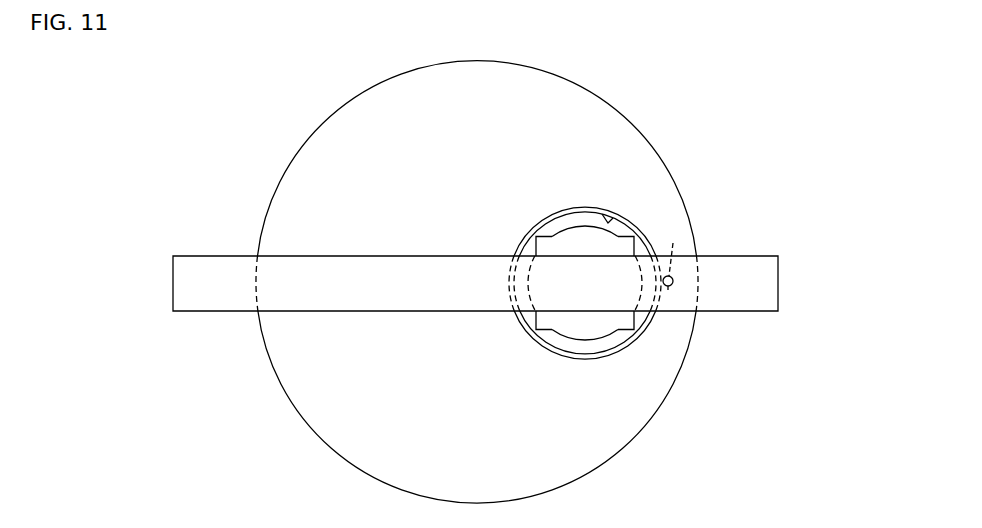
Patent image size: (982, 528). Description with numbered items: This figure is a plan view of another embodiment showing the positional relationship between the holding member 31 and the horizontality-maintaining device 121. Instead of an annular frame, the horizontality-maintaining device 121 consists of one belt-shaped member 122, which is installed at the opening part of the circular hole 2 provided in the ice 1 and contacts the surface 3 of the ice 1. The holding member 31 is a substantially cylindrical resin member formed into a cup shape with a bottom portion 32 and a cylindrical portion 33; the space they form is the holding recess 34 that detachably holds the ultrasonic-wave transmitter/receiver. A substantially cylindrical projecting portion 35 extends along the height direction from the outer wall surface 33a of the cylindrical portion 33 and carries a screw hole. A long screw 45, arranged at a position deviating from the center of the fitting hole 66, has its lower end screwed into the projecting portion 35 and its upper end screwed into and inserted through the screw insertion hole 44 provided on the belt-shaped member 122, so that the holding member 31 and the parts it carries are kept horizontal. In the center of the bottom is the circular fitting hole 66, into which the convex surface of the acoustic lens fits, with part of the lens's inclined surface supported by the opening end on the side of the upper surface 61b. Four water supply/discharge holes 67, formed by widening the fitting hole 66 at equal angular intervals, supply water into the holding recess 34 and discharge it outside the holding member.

The ice 1 is at (477, 282).
The circular hole 2 is at (262, 232).
The surface 3 is at (297, 157).
The horizontality-maintaining device 121 is at (197, 255).
The belt-shaped member 122 is at (753, 265).
The holding member 31 is at (533, 222).
The bottom portion 32 is at (568, 220).
The cylindrical portion 33 is at (575, 234).
The outer wall surface 33a is at (543, 349).
The holding recess 34 is at (610, 217).
The projecting portion 35 is at (674, 245).
The screw insertion hole 44 is at (668, 287).
The long screw 45 is at (673, 282).
The upper surface 61b is at (588, 356).
The fitting hole 66 is at (583, 229).
The water supply/discharge hole 67 is at (534, 243).